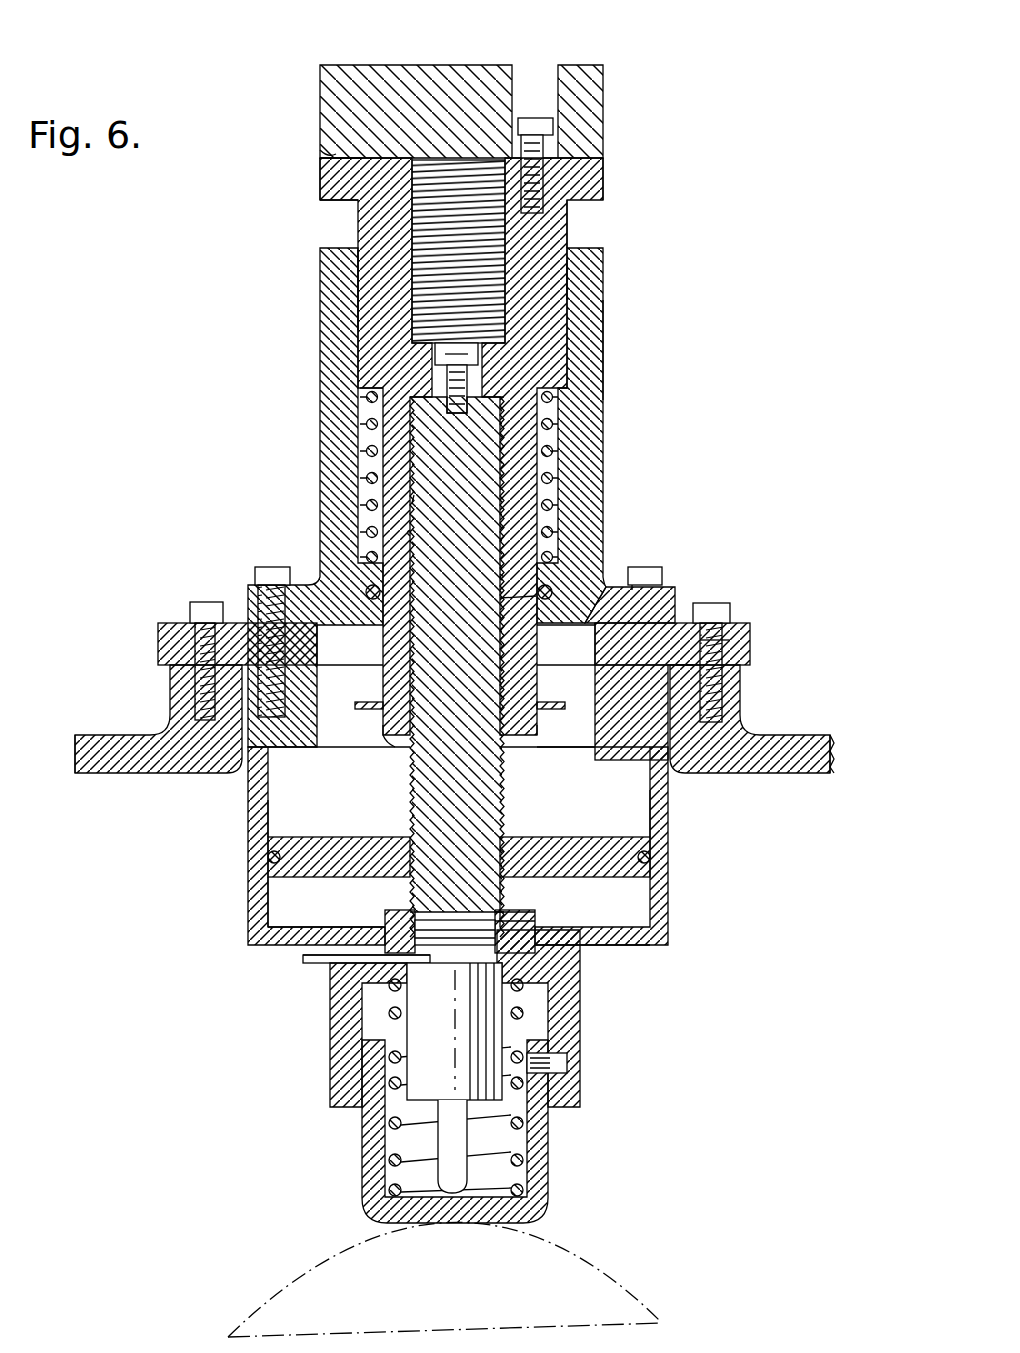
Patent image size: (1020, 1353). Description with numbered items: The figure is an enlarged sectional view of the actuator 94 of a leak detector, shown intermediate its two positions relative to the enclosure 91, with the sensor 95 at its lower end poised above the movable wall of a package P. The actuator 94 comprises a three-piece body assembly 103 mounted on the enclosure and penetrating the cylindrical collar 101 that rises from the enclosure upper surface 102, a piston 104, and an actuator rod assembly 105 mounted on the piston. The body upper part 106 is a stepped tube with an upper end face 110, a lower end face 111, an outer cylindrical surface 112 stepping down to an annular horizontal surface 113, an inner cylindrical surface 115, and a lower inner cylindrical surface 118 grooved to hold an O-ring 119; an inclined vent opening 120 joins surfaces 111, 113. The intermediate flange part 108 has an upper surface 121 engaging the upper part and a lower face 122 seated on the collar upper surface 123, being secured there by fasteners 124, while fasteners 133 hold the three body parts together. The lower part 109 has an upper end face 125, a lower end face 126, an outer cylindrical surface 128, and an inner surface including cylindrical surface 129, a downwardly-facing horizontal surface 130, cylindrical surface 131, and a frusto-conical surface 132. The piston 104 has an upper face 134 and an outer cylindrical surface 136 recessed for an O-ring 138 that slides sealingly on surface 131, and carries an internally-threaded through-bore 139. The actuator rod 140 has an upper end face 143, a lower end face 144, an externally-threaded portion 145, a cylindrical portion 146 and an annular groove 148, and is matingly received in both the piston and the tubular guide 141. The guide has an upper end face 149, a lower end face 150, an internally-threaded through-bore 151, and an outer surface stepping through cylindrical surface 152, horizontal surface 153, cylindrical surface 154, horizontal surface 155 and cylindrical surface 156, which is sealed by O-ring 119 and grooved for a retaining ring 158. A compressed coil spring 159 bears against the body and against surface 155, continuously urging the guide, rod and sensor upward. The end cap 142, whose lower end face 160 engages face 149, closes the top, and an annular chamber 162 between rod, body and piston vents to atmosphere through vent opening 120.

The enclosure 91 is at (835, 737).
The actuator 94 is at (576, 905).
The sensor 95 is at (562, 1160).
The cylindrical collar 101 is at (740, 679).
The upper surface 102 is at (830, 735).
The body assembly 103 is at (605, 385).
The piston 104 is at (560, 840).
The actuator rod assembly 105 is at (604, 178).
The upper part 106 is at (583, 310).
The intermediate flange part 108 is at (742, 634).
The lower part 109 is at (668, 818).
The upper end face 110 is at (604, 250).
The lower end face 111 is at (619, 644).
The outer cylindrical surface 112 is at (604, 343).
The annular horizontal surface 113 is at (665, 584).
The inner cylindrical surface 115 is at (564, 302).
The inner cylindrical surface 118 is at (506, 577).
The O-ring 119 is at (504, 598).
The vent opening 120 is at (586, 626).
The upper surface 121 is at (630, 605).
The support block 122 is at (606, 674).
The upper surface 123 is at (745, 654).
The fasteners 124 is at (204, 603).
The upper end face 125 is at (677, 650).
The lower end face 126 is at (658, 946).
The outer cylindrical surface 128 is at (668, 857).
The inner cylindrical surface 129 is at (595, 728).
The annular horizontal surface 130 is at (598, 762).
The inner cylindrical surface 131 is at (650, 812).
The frusto-conical surface 132 is at (646, 958).
The fasteners 133 is at (270, 566).
The upper face 134 is at (330, 836).
The outer cylindrical surface 136 is at (268, 855).
The O-ring 138 is at (280, 857).
The internally-threaded through-bore 139 is at (416, 849).
The actuator rod 140 is at (475, 665).
The tubular guide 141 is at (406, 237).
The end cap 142 is at (440, 72).
The upper end face 143 is at (459, 406).
The lower end face 144 is at (438, 936).
The externally-threaded portion 145 is at (413, 535).
The cylindrical portion 146 is at (431, 964).
The annular groove 148 is at (469, 926).
The upper end face 149 is at (320, 146).
The lower end face 150 is at (393, 740).
The internally-threaded through-bore 151 is at (416, 499).
The outer cylindrical surface 152 is at (320, 180).
The annular horizontal surface 153 is at (358, 202).
The outer cylindrical surface 154 is at (346, 282).
The annular horizontal surface 155 is at (360, 396).
The outer cylindrical surface 156 is at (357, 452).
The retaining ring 158 is at (572, 690).
The coil spring 159 is at (554, 432).
The lower end face 160 is at (355, 169).
The annular chamber 162 is at (535, 118).
The package P is at (620, 1278).